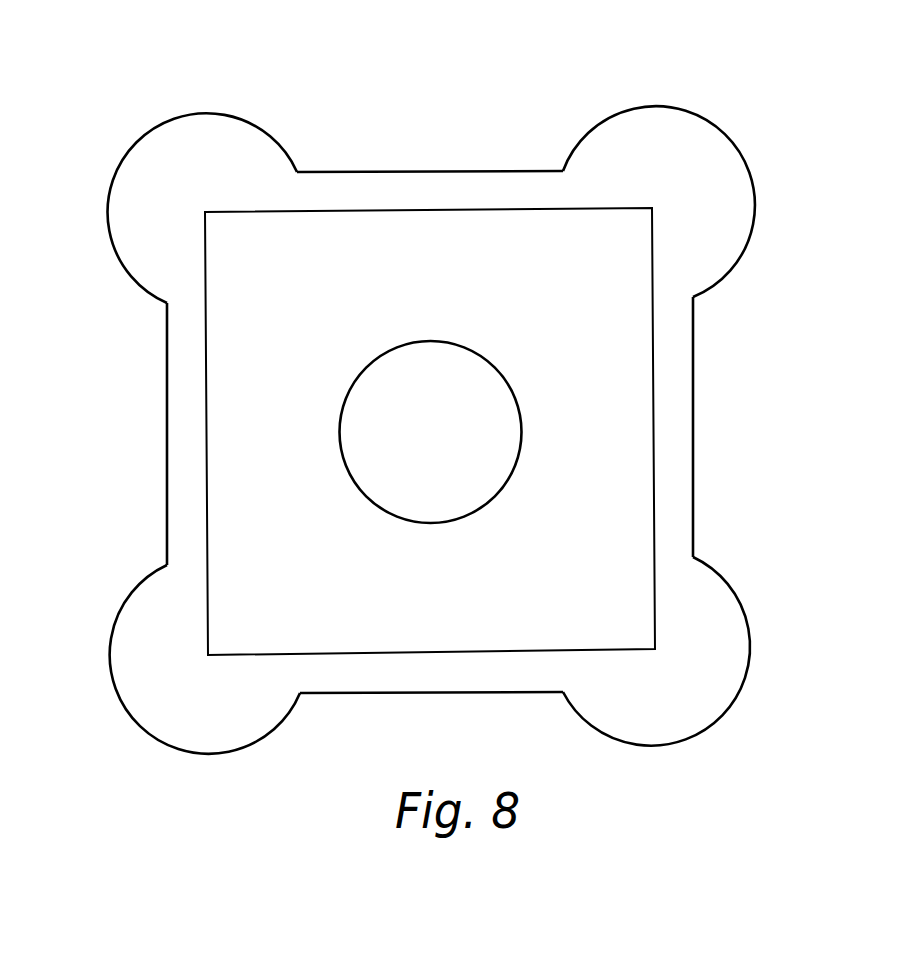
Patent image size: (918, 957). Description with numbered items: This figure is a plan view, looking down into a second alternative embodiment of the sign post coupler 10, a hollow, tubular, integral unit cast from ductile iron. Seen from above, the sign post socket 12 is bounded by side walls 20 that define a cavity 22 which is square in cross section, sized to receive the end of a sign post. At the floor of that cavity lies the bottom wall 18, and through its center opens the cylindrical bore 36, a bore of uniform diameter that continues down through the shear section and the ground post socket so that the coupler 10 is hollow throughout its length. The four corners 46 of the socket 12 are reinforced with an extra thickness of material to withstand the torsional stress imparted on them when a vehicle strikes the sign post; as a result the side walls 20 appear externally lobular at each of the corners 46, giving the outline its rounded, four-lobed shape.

The sign post coupler 10 is at (423, 134).
The sign post socket 12 is at (151, 407).
The bottom wall 18 is at (546, 603).
The side walls 20 is at (693, 440).
The cavity 22 is at (617, 528).
The cylindrical bore 36 is at (490, 362).
The corners 46 is at (666, 108).